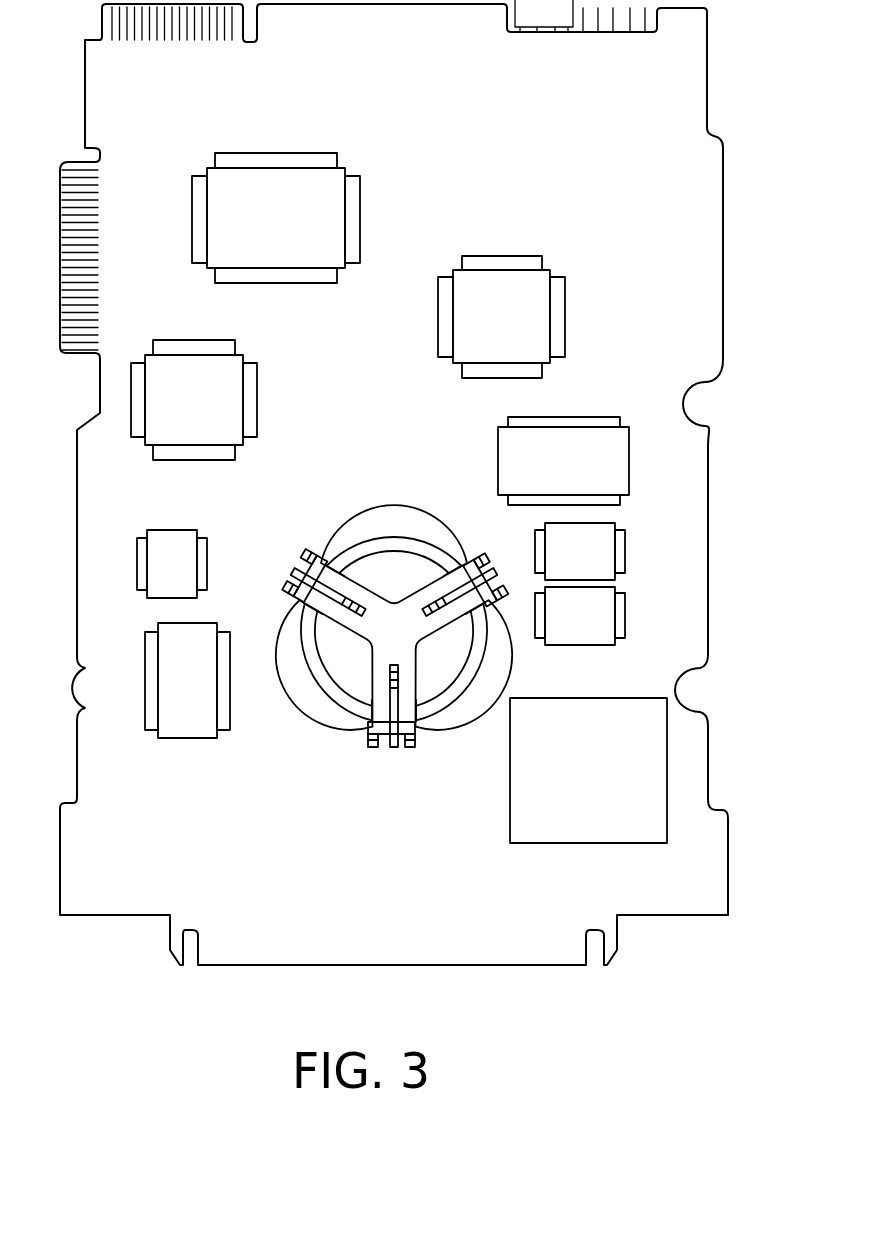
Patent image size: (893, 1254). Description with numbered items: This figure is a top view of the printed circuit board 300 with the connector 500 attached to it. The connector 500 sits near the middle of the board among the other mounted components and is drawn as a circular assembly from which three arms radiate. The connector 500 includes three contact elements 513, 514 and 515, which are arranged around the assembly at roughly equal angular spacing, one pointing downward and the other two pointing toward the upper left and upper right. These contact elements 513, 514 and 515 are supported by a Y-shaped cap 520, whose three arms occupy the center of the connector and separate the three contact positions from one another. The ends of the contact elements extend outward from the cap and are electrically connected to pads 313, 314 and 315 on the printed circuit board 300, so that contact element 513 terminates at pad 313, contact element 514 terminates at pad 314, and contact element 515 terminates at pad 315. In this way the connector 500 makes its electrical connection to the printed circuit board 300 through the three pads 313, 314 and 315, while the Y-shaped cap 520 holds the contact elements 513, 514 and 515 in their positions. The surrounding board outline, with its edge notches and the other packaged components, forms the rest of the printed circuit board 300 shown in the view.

The printed circuit board 300 is at (709, 572).
The connector 500 is at (335, 693).
The Y-shaped cap 520 is at (368, 587).
The contact element 513 is at (368, 710).
The contact element 514 is at (446, 575).
The contact element 515 is at (337, 568).
The pad 313 is at (418, 733).
The pad 314 is at (497, 603).
The pad 315 is at (283, 588).